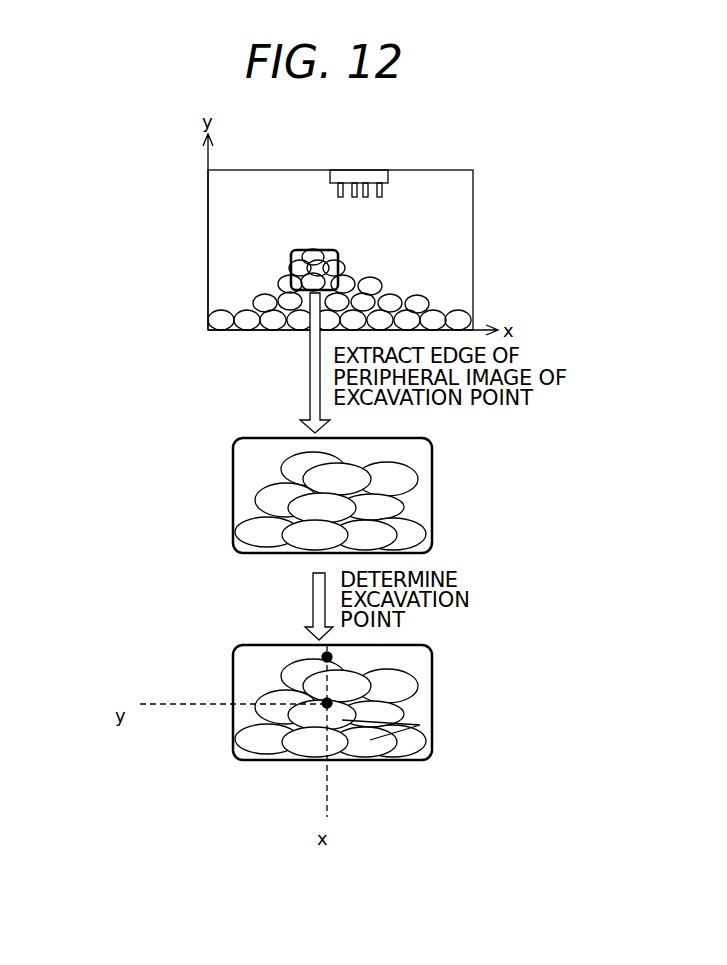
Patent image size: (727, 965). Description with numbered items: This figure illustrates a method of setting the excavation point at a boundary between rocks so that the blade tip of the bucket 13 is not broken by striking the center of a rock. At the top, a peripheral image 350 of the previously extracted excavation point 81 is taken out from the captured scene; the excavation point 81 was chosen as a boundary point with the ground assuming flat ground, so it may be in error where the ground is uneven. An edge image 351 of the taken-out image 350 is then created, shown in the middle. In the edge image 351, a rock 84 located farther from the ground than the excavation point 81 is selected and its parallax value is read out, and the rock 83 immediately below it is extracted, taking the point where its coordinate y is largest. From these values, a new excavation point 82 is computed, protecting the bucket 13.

The bucket 13 is at (363, 180).
The excavation point 81 is at (207, 290).
The excavation point 82 is at (327, 703).
The rock 83 is at (370, 740).
The rock 84 is at (320, 689).
The peripheral image 350 is at (207, 290).
The edge image 351 is at (235, 455).